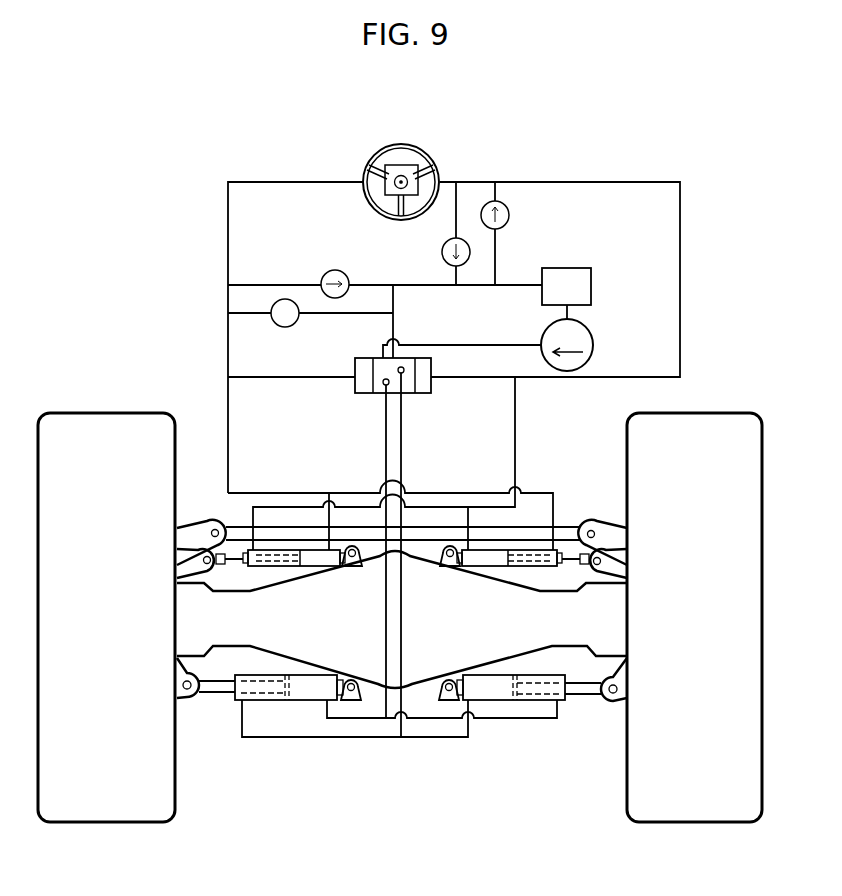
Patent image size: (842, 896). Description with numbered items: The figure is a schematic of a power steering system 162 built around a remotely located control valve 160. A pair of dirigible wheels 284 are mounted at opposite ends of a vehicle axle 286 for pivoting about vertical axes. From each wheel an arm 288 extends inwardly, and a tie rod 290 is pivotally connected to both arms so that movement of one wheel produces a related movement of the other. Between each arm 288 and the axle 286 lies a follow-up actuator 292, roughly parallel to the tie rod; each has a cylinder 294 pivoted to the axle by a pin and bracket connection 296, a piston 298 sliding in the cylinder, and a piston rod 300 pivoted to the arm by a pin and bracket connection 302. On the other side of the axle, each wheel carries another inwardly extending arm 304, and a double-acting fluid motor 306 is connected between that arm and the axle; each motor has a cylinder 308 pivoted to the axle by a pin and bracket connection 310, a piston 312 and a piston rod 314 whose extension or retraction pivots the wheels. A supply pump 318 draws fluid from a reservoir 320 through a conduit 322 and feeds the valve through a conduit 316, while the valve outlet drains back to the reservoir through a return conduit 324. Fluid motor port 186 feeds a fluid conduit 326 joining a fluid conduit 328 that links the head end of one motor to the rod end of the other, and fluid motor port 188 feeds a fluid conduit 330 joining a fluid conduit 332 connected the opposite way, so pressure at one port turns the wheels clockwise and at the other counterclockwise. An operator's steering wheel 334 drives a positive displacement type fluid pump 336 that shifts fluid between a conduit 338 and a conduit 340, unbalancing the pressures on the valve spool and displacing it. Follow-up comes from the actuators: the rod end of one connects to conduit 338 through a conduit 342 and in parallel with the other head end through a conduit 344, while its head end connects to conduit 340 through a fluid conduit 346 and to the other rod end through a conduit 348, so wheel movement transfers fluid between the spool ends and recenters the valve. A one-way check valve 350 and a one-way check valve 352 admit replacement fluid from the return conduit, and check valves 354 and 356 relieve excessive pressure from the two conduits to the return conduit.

The control valve 160 is at (368, 354).
The power steering system 162 is at (590, 164).
The fluid motor port 186 is at (384, 386).
The fluid motor port 188 is at (403, 374).
The dirigible wheel 284 is at (100, 413).
The axle 286 is at (413, 633).
The arm 288 is at (200, 524).
The tie rod 290 is at (556, 500).
The follow-up actuator 292 is at (286, 568).
The cylinder 294 is at (342, 563).
The pin and bracket connection 296 is at (354, 560).
The piston 298 is at (302, 566).
The piston rod 300 is at (238, 563).
The pin and bracket connection 302 is at (200, 570).
The arm 304 is at (185, 672).
The double-acting fluid motor 306 is at (301, 706).
The cylinder 308 is at (316, 700).
The pin and bracket connection 310 is at (352, 694).
The piston 312 is at (286, 700).
The piston rod 314 is at (216, 690).
The conduit 316 is at (478, 345).
The supply pump 318 is at (594, 347).
The reservoir 320 is at (590, 275).
The conduit 322 is at (570, 311).
The return conduit 324 is at (395, 318).
The fluid conduit 326 is at (384, 438).
The fluid conduit 328 is at (438, 718).
The fluid conduit 330 is at (403, 438).
The fluid conduit 332 is at (367, 737).
The steering wheel 334 is at (370, 165).
The positive displacement type fluid pump 336 is at (412, 167).
The conduit 338 is at (530, 182).
The conduit 340 is at (278, 182).
The conduit 342 is at (280, 507).
The conduit 344 is at (475, 527).
The fluid conduit 346 is at (230, 410).
The conduit 348 is at (447, 492).
The one-way check valve 350 is at (510, 216).
The one-way check valve 352 is at (325, 274).
The check valve 354 is at (442, 246).
The check valve 356 is at (285, 327).